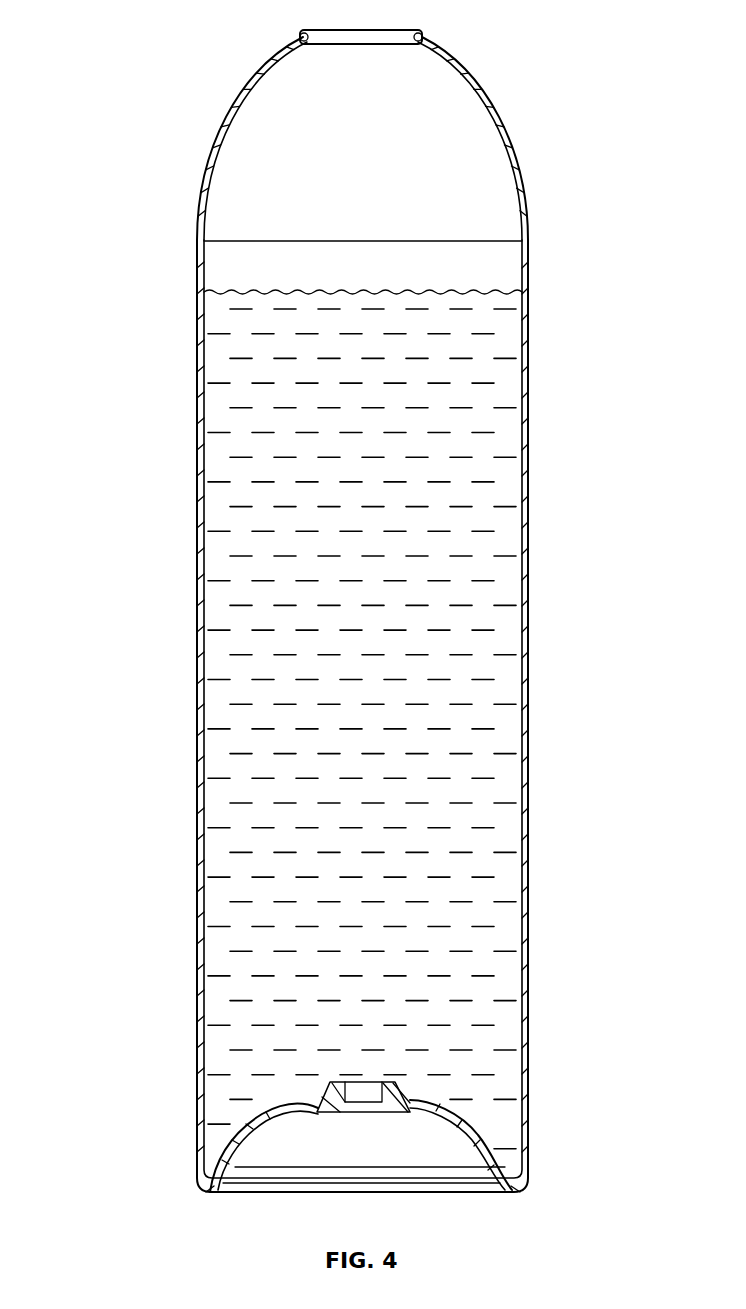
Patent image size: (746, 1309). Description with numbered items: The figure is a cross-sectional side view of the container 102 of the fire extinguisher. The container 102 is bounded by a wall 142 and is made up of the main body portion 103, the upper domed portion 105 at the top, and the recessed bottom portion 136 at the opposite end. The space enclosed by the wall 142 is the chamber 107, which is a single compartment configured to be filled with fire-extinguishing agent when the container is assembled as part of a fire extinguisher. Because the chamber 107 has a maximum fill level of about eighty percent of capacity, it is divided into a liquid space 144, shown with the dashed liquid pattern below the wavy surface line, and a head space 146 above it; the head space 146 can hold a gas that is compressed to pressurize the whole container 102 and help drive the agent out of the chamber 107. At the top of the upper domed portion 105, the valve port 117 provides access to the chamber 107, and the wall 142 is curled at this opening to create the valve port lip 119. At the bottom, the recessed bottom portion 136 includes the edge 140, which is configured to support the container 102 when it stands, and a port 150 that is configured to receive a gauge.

The container 102 is at (97, 40).
The main body portion 103 is at (535, 845).
The upper domed portion 105 is at (200, 188).
The chamber 107 is at (432, 690).
The valve port 117 is at (378, 32).
The valve port lip 119 is at (300, 35).
The recessed bottom portion 136 is at (540, 1112).
The edge 140 is at (212, 1188).
The wall 142 is at (528, 258).
The liquid space 144 is at (476, 554).
The head space 146 is at (423, 125).
The port 150 is at (364, 1090).